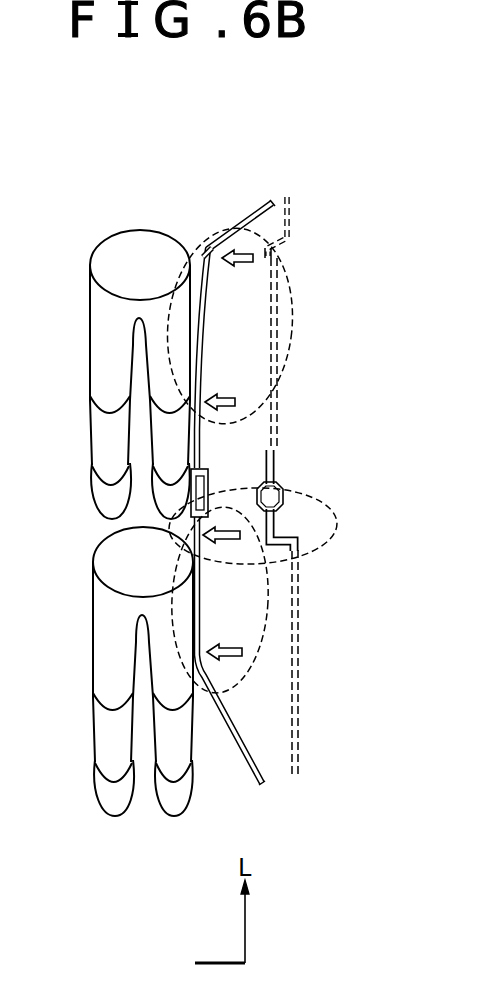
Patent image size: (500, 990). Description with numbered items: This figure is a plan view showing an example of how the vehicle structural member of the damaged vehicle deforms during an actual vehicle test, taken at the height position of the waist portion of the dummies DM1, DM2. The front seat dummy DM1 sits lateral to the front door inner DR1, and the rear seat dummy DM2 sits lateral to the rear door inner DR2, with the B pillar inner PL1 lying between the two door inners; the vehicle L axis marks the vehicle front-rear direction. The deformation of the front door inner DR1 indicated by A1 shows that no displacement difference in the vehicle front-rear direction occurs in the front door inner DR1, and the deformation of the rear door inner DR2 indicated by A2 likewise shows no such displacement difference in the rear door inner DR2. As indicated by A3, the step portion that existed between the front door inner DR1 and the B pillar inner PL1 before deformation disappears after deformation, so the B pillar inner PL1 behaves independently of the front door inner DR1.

The front seat dummy DM1 is at (105, 655).
The rear seat dummy DM2 is at (100, 313).
The front door inner DR1 is at (243, 748).
The rear door inner DR2 is at (200, 421).
The B pillar inner PL1 is at (209, 481).
The deformation of the front door inner A1 is at (264, 663).
The deformation of the rear door inner A2 is at (287, 312).
The step portion between front door inner and B pillar inner A3 is at (333, 515).